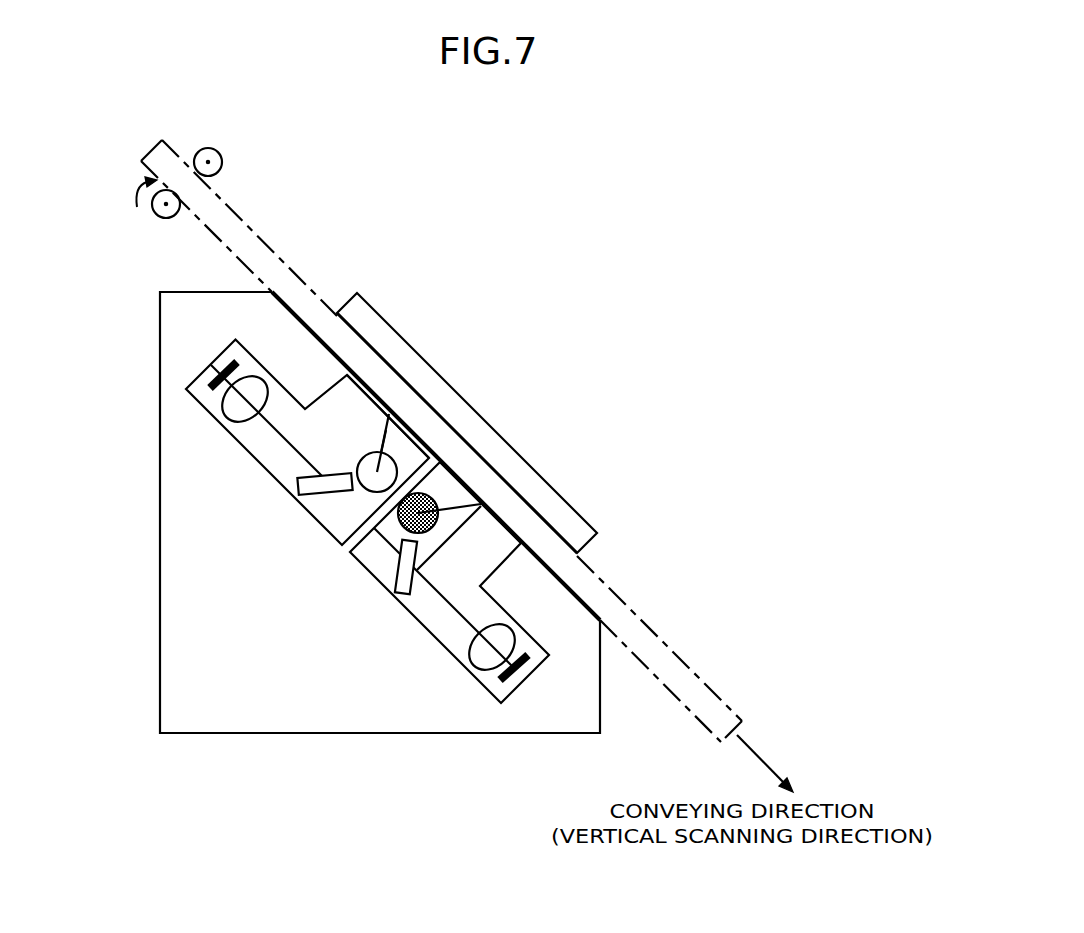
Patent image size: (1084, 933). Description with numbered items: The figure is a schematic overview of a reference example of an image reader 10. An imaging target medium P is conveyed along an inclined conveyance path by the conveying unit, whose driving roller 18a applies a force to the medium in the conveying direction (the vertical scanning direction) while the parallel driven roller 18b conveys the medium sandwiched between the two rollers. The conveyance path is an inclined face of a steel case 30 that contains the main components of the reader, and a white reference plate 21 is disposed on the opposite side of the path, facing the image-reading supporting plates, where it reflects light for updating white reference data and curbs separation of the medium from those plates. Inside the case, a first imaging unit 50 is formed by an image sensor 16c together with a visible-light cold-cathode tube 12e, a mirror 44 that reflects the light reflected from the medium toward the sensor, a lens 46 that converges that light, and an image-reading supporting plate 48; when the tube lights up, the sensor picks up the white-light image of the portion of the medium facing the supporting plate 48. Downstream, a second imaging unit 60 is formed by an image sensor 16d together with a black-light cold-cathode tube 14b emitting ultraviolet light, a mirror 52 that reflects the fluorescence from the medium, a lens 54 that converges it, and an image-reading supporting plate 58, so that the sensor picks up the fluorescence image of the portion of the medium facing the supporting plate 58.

The imaging target medium P is at (153, 148).
The image reader 10 is at (566, 186).
The driving roller 18a is at (155, 214).
The driven roller 18b is at (222, 161).
The white reference plate 21 is at (482, 417).
The steel case 30 is at (160, 625).
The imaging unit 50 is at (273, 435).
The image sensor 16c is at (227, 366).
The lens 46 is at (222, 413).
The image-reading supporting plate 48 is at (347, 376).
The mirror 44 is at (297, 486).
The visible-light cold-cathode tube 12e is at (362, 491).
The black-light cold-cathode tube 14b is at (398, 516).
The mirror 52 is at (395, 588).
The image-reading supporting plate 58 is at (514, 545).
The imaging unit 60 is at (420, 615).
The lens 54 is at (468, 664).
The image sensor 16d is at (513, 677).